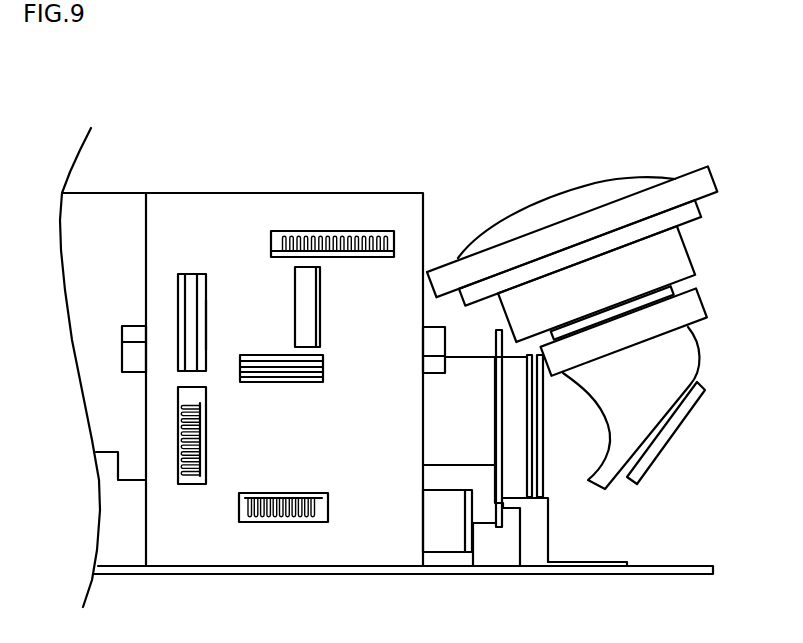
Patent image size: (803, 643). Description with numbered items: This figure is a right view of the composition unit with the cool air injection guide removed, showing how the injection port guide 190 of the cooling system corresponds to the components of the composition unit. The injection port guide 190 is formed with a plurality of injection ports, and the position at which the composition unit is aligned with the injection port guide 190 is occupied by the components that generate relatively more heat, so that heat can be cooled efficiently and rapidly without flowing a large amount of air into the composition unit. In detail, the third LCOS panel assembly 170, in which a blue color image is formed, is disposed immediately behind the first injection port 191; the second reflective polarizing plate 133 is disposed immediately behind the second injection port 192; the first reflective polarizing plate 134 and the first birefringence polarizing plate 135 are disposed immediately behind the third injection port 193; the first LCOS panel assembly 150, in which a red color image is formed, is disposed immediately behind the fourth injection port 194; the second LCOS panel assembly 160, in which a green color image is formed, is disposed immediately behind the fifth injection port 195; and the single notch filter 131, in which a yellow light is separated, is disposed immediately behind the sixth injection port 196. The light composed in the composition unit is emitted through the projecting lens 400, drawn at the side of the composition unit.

The injection port guide 190 is at (230, 203).
The single notch filter 131 is at (193, 283).
The sixth injection port 196 is at (207, 342).
The third LCOS panel assembly 170 is at (371, 232).
The first injection port 191 is at (336, 232).
The second injection port 192 is at (295, 283).
The second reflective polarizing plate 133 is at (320, 320).
The first reflective polarizing plate 134 is at (323, 367).
The first birefringence polarizing plate 135 is at (308, 383).
The third injection port 193 is at (291, 383).
The second LCOS panel assembly 160 is at (192, 467).
The fifth injection port 195 is at (202, 402).
The first LCOS panel assembly 150 is at (275, 523).
The fourth injection port 194 is at (330, 503).
The projecting lens 400 is at (647, 200).